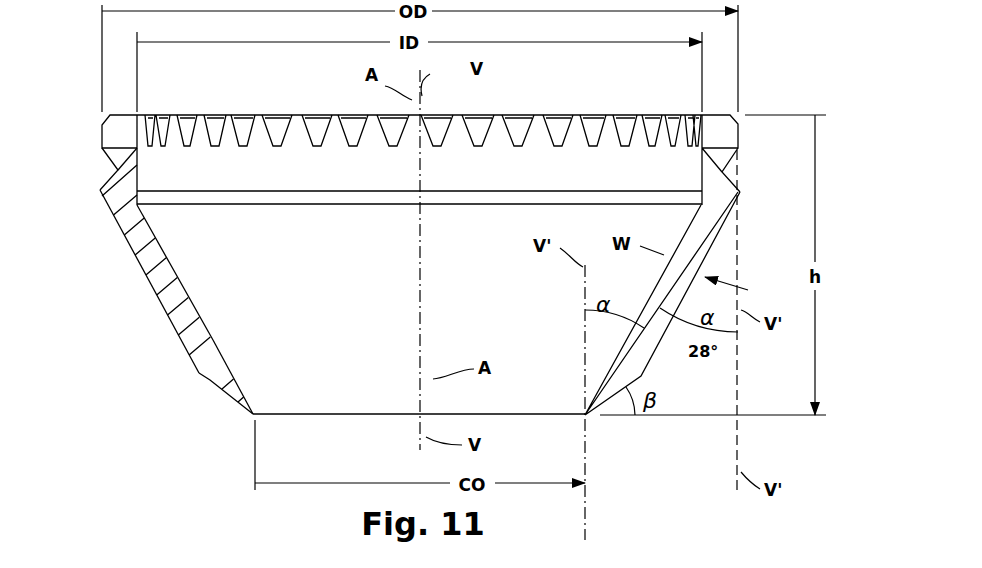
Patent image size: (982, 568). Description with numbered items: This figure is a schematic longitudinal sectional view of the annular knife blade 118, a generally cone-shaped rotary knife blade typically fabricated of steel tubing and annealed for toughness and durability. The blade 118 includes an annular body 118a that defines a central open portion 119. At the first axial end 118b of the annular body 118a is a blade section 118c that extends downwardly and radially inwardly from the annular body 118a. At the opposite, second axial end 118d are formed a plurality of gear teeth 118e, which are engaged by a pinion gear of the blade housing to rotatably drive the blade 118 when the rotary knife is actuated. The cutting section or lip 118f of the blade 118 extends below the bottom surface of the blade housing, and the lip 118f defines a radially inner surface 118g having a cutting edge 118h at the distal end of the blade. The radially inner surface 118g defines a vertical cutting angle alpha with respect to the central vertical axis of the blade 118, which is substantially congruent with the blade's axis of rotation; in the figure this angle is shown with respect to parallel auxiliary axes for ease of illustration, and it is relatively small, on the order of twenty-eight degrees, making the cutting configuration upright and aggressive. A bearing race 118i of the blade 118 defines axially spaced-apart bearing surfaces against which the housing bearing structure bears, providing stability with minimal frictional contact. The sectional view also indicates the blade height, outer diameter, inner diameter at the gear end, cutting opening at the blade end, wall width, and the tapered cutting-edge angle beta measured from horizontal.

The annular knife blade 118 is at (803, 190).
The annular body 118a is at (99, 190).
The first axial end 118b is at (181, 353).
The blade section 118c is at (206, 386).
The second axial end 118d is at (100, 117).
The gear teeth 118e is at (215, 128).
The cutting section or lip 118f is at (193, 290).
The radially inner surface 118g is at (237, 384).
The cutting edge 118h is at (262, 415).
The bearing race 118i is at (118, 170).
The central open portion 119 is at (388, 354).